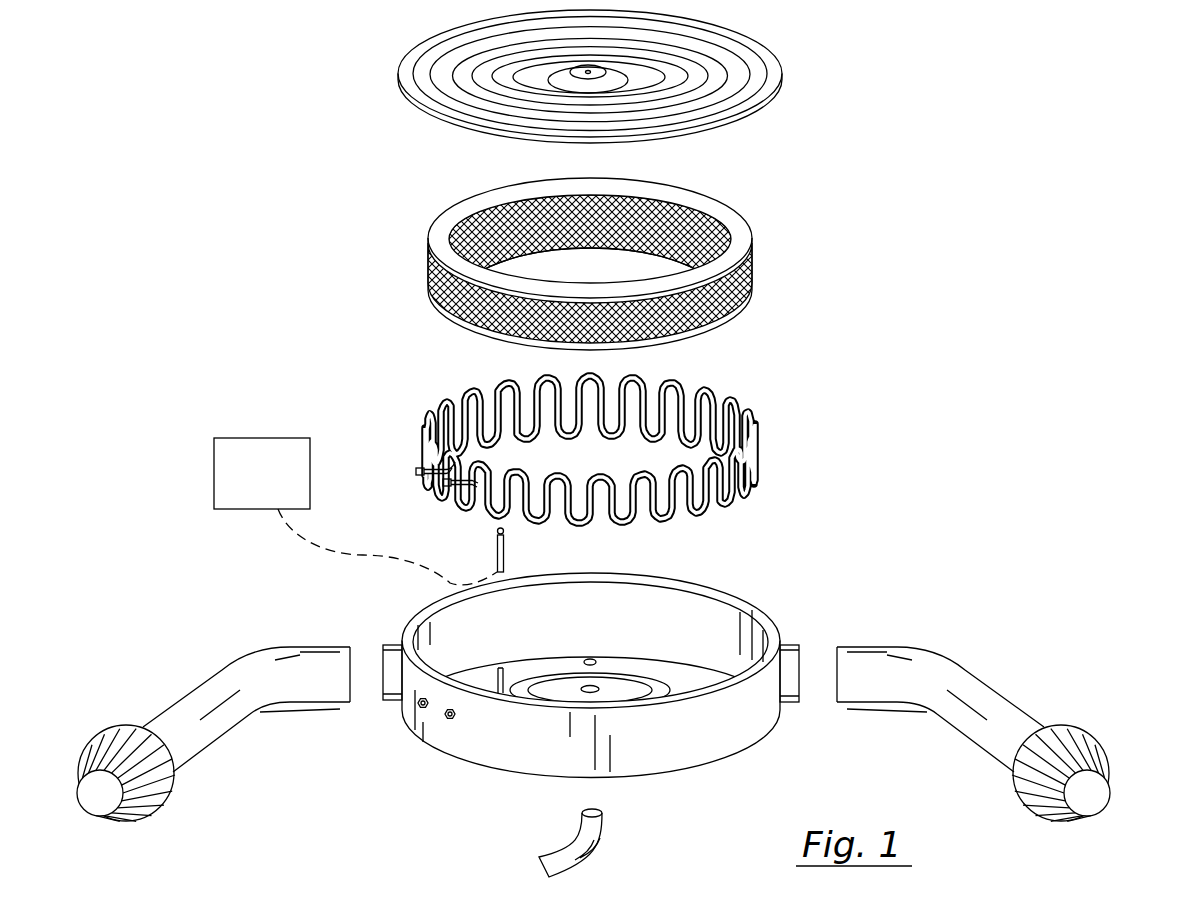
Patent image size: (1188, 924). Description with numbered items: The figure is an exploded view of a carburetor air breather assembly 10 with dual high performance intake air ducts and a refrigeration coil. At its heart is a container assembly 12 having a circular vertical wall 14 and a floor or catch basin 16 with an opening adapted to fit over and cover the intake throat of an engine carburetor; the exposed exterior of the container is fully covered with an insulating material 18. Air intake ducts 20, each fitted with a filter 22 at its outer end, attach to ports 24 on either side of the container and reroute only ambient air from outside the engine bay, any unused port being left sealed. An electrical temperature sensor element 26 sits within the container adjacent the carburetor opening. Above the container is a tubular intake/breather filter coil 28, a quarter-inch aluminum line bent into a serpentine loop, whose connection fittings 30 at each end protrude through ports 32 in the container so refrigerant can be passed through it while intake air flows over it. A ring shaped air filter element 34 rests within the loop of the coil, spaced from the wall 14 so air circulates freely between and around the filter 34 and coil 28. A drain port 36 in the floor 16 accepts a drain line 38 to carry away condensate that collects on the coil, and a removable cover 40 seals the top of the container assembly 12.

The carburetor air breather assembly 10 is at (314, 158).
The container assembly 12 is at (594, 692).
The circular vertical wall 14 is at (713, 627).
The floor or catch basin 16 is at (692, 683).
The insulating material 18 is at (705, 733).
The air intake ducts 20 is at (218, 685).
The filters 22 is at (103, 757).
The ports 24 is at (382, 648).
The electrical temperature sensor element 26 is at (496, 541).
The intake/breather filter coil 28 is at (736, 405).
The connection fittings 30 is at (416, 471).
The ports 32 is at (420, 704).
The ring shaped air filter element 34 is at (755, 275).
The drain port 36 is at (592, 660).
The drain line 38 is at (562, 857).
The removable cover 40 is at (750, 68).